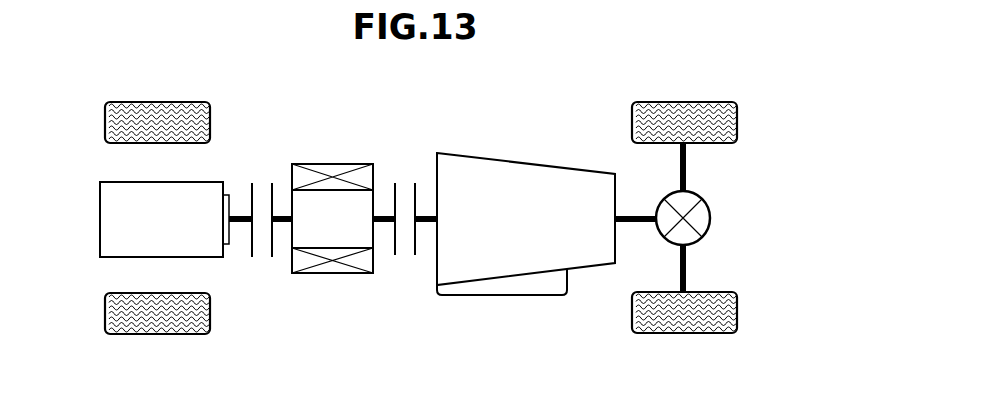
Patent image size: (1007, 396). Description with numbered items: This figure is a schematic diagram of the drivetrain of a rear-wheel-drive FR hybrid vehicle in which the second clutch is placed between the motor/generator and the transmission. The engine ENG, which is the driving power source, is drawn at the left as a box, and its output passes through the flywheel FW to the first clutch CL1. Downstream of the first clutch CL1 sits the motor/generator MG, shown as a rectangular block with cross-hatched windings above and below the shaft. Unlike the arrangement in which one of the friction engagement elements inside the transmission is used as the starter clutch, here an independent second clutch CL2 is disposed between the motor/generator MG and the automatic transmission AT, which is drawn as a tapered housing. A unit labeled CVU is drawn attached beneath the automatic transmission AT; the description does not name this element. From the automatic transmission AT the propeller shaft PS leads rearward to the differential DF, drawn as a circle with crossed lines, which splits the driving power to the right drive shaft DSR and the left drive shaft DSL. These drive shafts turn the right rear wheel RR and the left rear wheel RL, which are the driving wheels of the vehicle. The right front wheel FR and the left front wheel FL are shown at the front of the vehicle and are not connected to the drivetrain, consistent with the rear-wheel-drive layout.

The engine ENG is at (161, 219).
The flywheel FW is at (227, 194).
The first clutch CL1 is at (261, 209).
The motor/generator MG is at (332, 207).
The second clutch CL2 is at (404, 208).
The automatic transmission AT is at (554, 167).
The control valve unit CVU is at (438, 291).
The propeller shaft PS is at (650, 225).
The differential DF is at (712, 218).
The right drive shaft DSR is at (688, 167).
The left drive shaft DSL is at (688, 268).
The right front wheel FR is at (105, 118).
The left front wheel FL is at (105, 313).
The right rear wheel RR is at (737, 123).
The left rear wheel RL is at (737, 310).